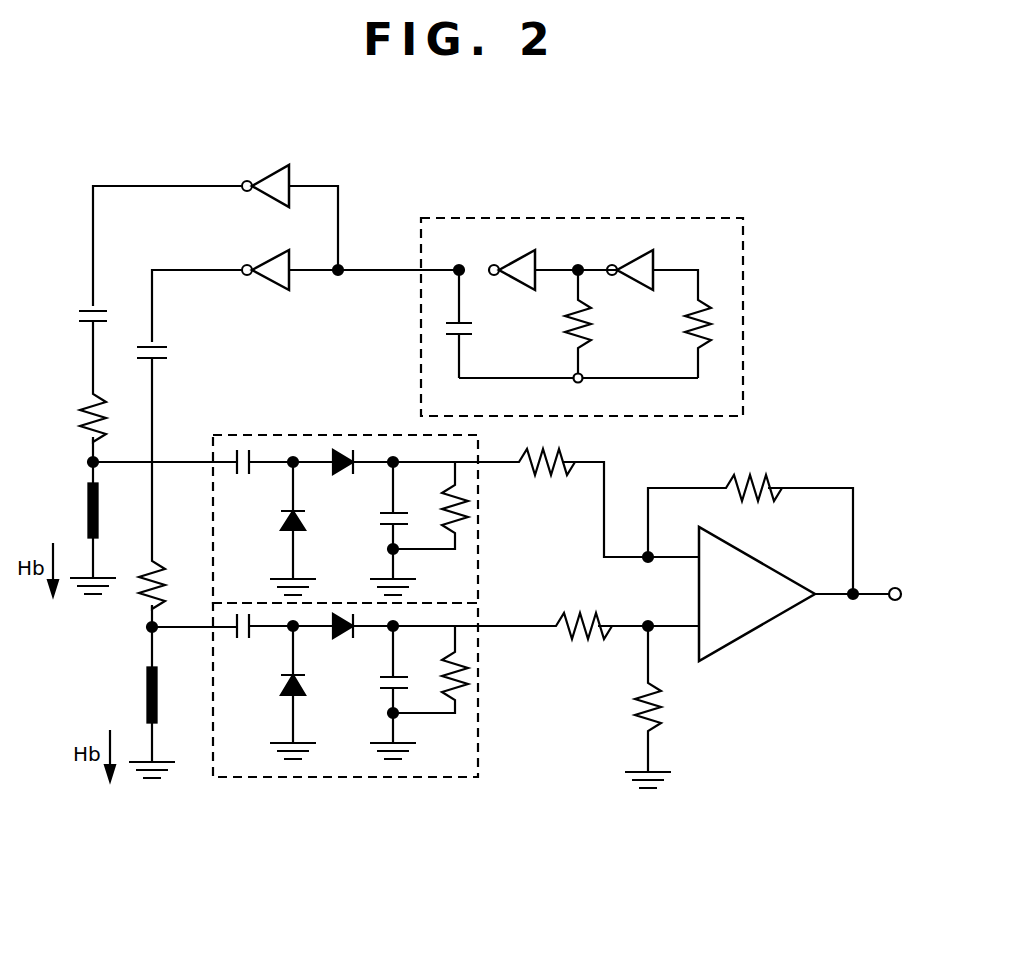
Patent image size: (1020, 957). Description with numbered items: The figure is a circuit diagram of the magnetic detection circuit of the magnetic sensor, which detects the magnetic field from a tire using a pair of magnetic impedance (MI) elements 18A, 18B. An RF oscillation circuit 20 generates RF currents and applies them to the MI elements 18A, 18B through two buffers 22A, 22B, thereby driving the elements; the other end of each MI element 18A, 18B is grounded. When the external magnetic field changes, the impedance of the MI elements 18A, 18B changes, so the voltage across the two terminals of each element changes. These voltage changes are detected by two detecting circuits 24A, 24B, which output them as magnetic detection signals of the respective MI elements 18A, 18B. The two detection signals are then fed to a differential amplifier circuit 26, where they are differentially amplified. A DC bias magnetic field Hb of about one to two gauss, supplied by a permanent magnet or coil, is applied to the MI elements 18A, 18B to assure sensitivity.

The RF oscillation circuit 20 is at (470, 218).
The buffer 22A is at (289, 182).
The buffer 22B is at (289, 286).
The detecting circuit 24A is at (247, 435).
The detecting circuit 24B is at (250, 777).
The magnetic detection element 18A is at (98, 528).
The magnetic detection element 18B is at (157, 712).
The differential amplifier circuit 26 is at (770, 559).